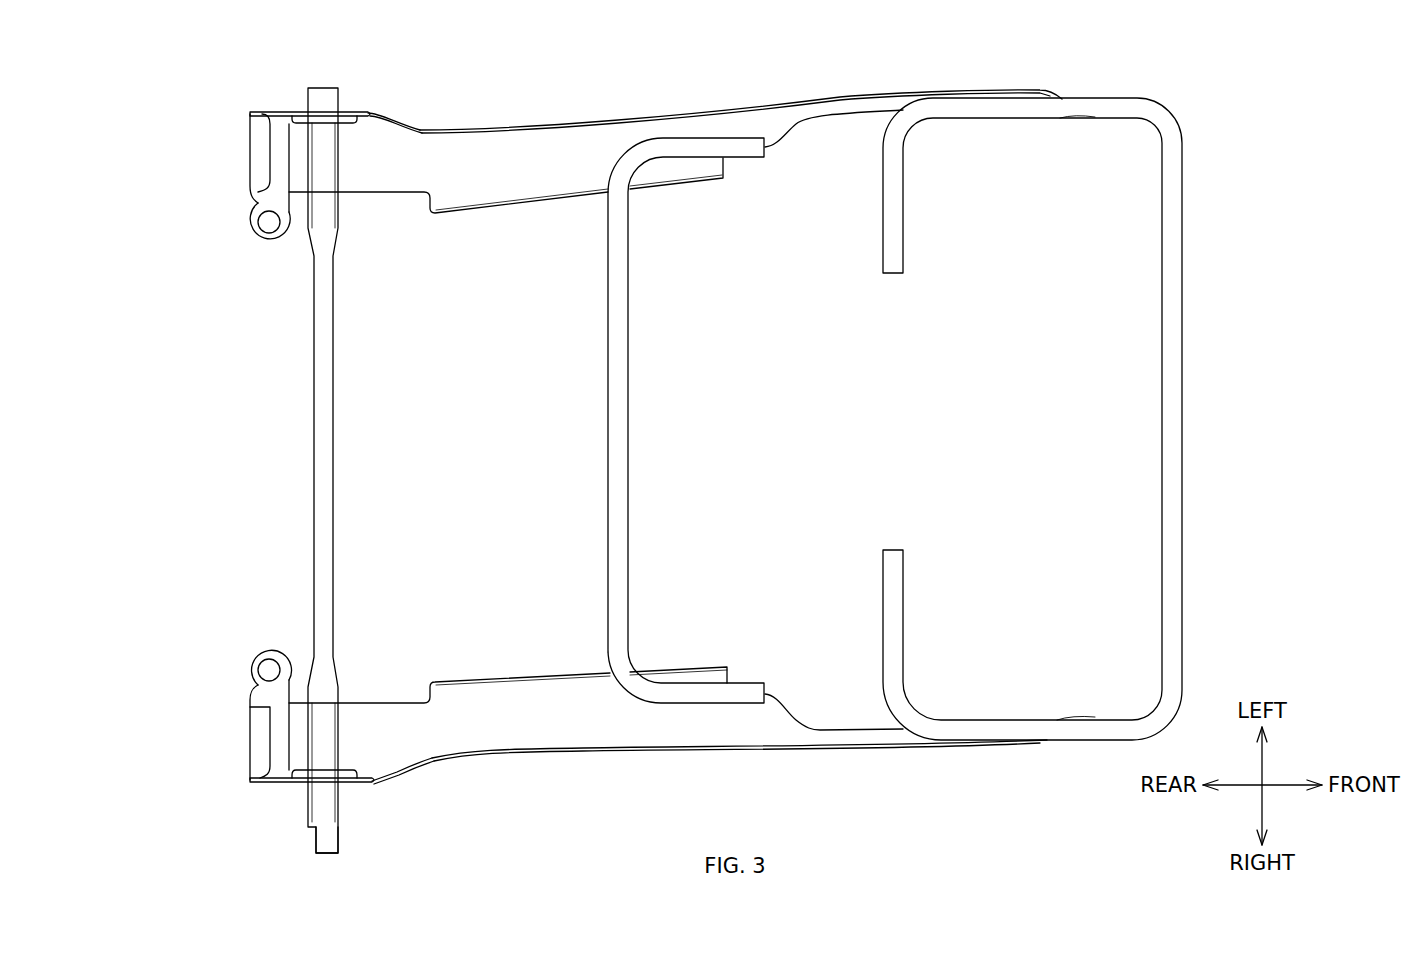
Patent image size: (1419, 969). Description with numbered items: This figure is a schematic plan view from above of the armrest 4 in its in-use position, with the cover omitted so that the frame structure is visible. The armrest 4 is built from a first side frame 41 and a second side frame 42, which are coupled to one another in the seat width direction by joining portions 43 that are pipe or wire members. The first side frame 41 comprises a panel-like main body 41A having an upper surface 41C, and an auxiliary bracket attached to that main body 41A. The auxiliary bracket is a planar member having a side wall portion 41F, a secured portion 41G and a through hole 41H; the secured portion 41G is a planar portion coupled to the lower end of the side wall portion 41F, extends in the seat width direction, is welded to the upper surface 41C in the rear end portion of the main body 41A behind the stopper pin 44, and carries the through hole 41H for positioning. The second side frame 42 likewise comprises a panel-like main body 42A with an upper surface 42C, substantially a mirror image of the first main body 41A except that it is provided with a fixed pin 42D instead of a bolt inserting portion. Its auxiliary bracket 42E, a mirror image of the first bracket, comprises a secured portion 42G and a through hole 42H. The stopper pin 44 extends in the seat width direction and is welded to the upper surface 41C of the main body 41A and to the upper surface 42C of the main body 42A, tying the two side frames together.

The armrest 4 is at (1067, 82).
The first side frame 41 is at (226, 156).
The main body 41A is at (572, 150).
The upper surface 41C is at (400, 142).
The side wall portion 41F is at (278, 112).
The secured portion 41G is at (263, 200).
The through hole 41H is at (276, 232).
The second side frame 42 is at (226, 740).
The main body 42A is at (563, 718).
The upper surface 42C is at (388, 748).
The fixed pin 42D is at (333, 836).
The auxiliary bracket 42E is at (283, 772).
The secured portion 42G is at (263, 692).
The through hole 42H is at (263, 665).
The joining portions 43 is at (620, 422).
The stopper pin 44 is at (323, 423).